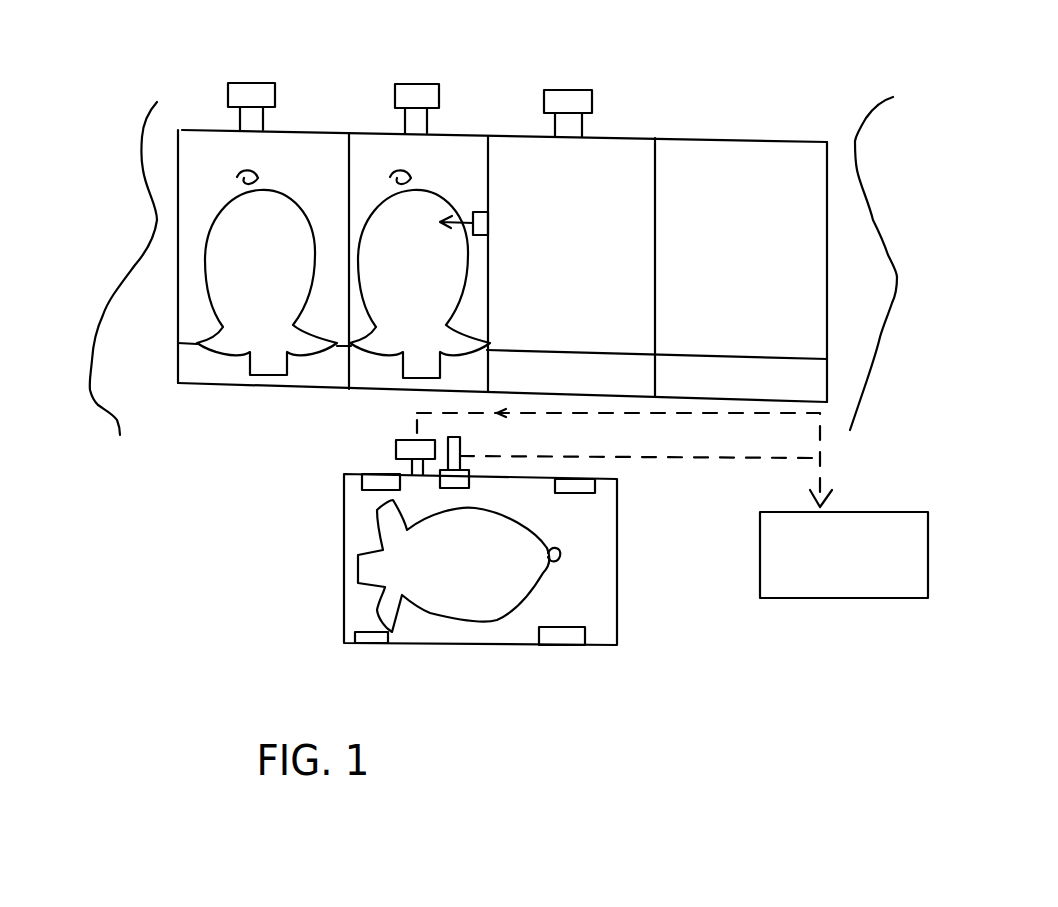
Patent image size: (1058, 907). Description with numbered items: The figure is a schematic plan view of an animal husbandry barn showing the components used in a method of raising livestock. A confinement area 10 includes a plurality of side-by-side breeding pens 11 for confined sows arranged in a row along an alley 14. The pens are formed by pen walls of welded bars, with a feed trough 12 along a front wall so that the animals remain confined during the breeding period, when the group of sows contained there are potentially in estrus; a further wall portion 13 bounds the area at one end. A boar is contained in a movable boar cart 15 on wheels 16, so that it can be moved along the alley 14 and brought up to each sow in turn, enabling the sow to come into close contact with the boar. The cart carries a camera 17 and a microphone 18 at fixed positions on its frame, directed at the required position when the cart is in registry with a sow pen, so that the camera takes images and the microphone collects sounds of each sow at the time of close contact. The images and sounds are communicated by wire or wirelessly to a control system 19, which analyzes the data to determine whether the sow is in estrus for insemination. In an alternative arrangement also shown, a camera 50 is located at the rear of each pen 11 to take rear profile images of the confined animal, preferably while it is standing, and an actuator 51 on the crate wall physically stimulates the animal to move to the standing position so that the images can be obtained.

The confinement area 10 is at (708, 98).
The breeding pen 11 is at (327, 137).
The feed trough 12 is at (200, 377).
The side wall 13 is at (177, 272).
The alley 14 is at (532, 590).
The boar cart 15 is at (617, 627).
The wheels 16 is at (565, 638).
The camera 17 is at (395, 452).
The microphone 18 is at (462, 447).
The control system 19 is at (858, 583).
The camera 50 is at (425, 97).
The actuator 51 is at (483, 217).